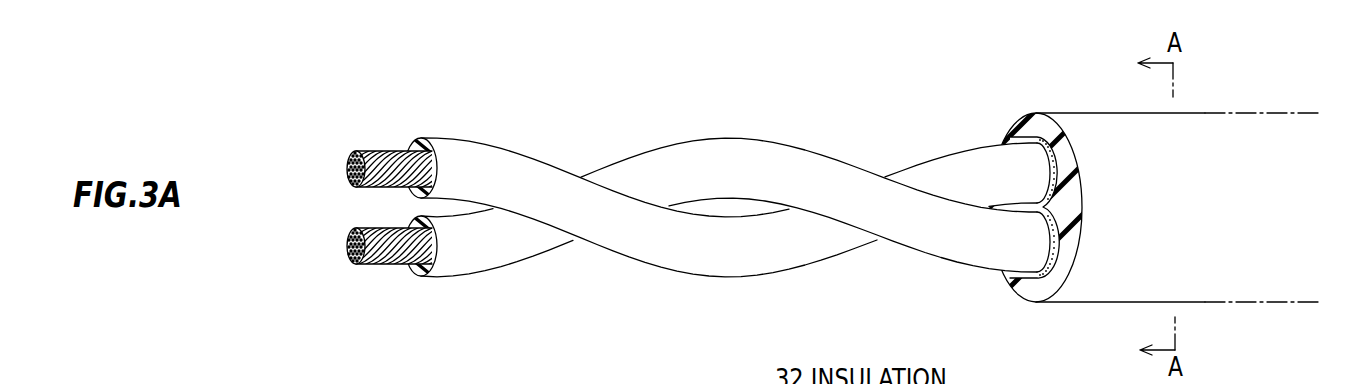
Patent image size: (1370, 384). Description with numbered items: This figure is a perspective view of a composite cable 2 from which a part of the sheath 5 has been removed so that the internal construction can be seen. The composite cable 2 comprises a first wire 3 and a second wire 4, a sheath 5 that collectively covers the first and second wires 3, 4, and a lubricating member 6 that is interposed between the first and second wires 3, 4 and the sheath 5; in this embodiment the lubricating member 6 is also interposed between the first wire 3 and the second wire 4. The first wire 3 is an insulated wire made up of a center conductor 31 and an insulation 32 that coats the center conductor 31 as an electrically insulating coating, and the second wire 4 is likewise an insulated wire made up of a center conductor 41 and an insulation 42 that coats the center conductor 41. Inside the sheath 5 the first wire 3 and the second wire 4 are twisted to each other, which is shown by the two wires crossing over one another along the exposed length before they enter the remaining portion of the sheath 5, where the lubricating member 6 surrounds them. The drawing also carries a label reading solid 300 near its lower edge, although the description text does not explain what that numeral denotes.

The composite cable 2 is at (503, 60).
The first wire 3 is at (422, 97).
The center conductor 31 is at (394, 156).
The insulation 32 is at (428, 150).
The second wire 4 is at (437, 317).
The center conductor 41 is at (400, 265).
The insulation 42 is at (424, 276).
The sheath 5 is at (1030, 291).
The lubricating member 6 is at (1025, 283).
The solid wire 300 is at (555, 378).